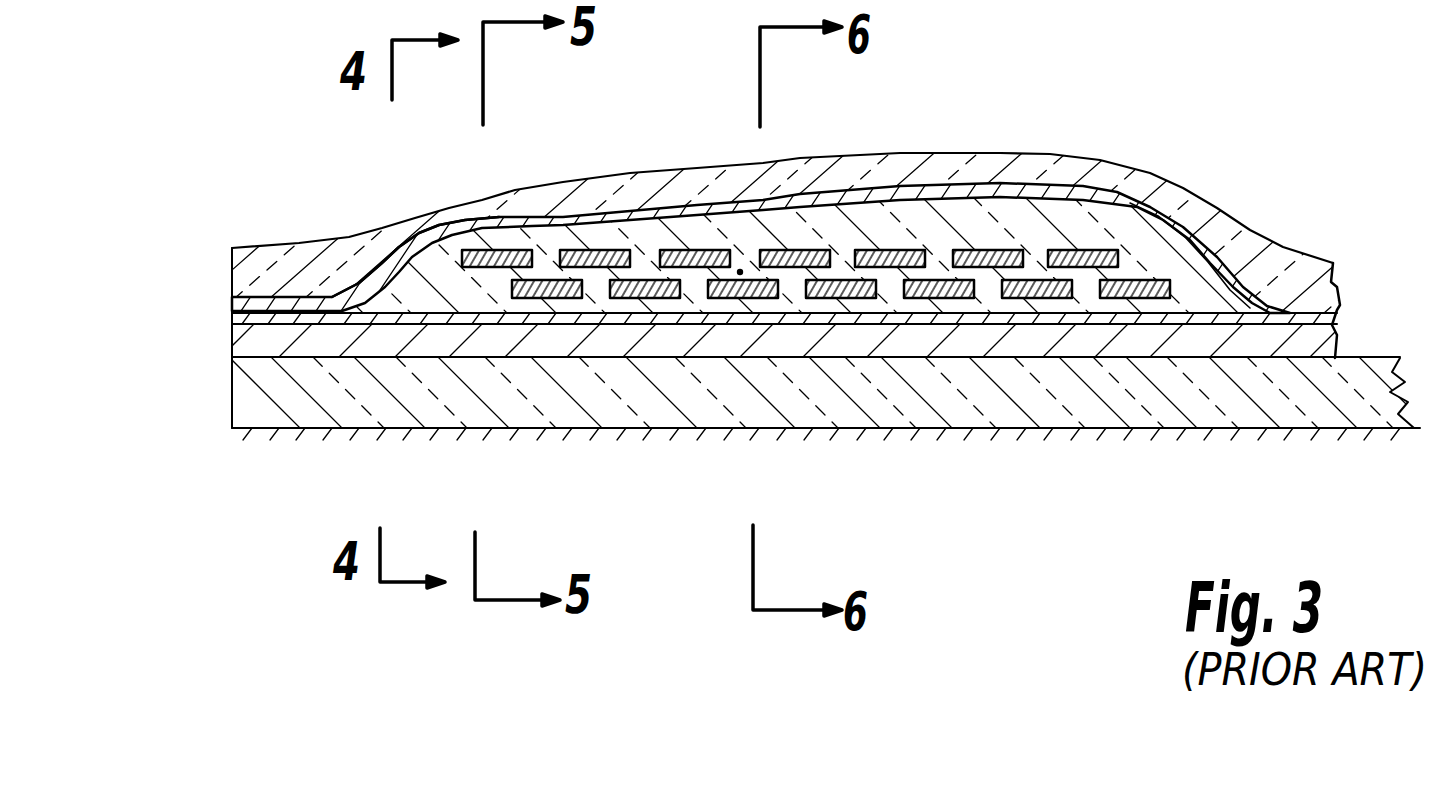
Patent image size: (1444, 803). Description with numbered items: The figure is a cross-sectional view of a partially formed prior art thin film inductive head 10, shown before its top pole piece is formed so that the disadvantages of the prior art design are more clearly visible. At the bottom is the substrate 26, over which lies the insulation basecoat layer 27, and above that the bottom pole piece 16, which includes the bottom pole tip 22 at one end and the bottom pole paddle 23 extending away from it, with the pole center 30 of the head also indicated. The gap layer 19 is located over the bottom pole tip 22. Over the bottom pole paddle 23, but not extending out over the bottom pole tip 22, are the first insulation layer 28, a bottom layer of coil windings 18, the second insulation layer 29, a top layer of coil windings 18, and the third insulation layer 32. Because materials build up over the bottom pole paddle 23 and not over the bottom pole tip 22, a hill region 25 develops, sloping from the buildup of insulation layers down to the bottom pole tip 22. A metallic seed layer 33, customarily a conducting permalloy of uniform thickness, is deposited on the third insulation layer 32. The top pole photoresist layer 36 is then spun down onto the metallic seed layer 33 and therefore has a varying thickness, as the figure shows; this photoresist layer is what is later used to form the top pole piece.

The thin film inductive head 10 is at (532, 456).
The bottom pole piece 16 is at (1277, 343).
The coil windings 18 is at (685, 249).
The gap layer 19 is at (232, 315).
The bottom pole tip 22 is at (230, 333).
The bottom pole paddle 23 is at (883, 339).
The hill region 25 is at (407, 253).
The substrate 26 is at (1190, 437).
The insulation basecoat layer 27 is at (300, 407).
The first insulation layer 28 is at (732, 312).
The second insulation layer 29 is at (740, 270).
The pole center 30 is at (1359, 306).
The third insulation layer 32 is at (983, 220).
The metallic seed layer 33 is at (1167, 230).
The top pole photoresist layer 36 is at (1030, 167).